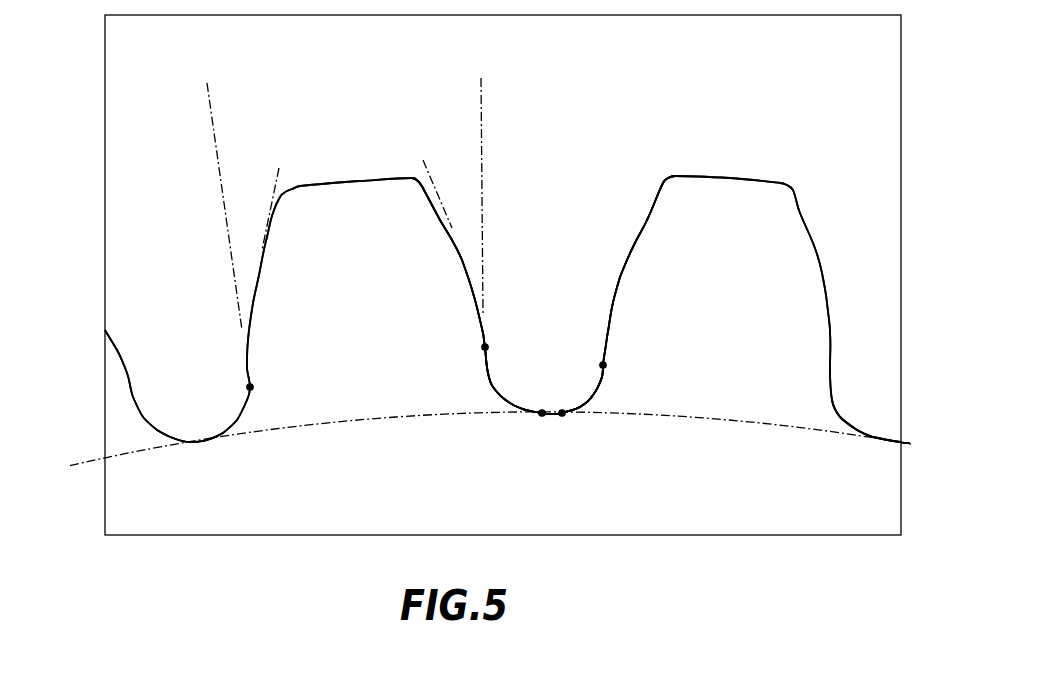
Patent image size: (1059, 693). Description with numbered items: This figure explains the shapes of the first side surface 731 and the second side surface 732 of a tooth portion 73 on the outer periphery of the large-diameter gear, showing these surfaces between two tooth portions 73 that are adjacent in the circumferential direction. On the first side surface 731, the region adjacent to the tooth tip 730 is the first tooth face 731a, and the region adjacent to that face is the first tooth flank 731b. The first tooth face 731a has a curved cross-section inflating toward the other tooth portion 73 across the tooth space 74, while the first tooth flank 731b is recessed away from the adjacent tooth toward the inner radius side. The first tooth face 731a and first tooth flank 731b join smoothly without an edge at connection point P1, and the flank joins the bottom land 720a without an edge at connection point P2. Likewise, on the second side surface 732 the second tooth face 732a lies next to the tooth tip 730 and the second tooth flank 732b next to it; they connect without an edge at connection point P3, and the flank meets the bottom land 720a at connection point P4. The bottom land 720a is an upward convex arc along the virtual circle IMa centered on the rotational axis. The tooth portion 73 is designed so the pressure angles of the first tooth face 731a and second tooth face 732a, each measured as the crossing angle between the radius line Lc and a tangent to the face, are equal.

The tooth portion 73 is at (327, 175).
The tooth tip 730 is at (358, 182).
The first side surface 731 is at (368, 293).
The first tooth face 731a is at (462, 258).
The first tooth flank 731b is at (490, 382).
The second side surface 732 is at (258, 268).
The second tooth face 732a is at (613, 282).
The second tooth flank 732b is at (600, 376).
The tooth space 74 is at (192, 250).
The bottom land 720a is at (207, 436).
The connection point P1 is at (486, 347).
The connection point P2 is at (540, 414).
The connection point P3 is at (250, 387).
The connection point P4 is at (564, 414).
The radius line Lc is at (474, 183).
The virtual circle IMa is at (463, 452).